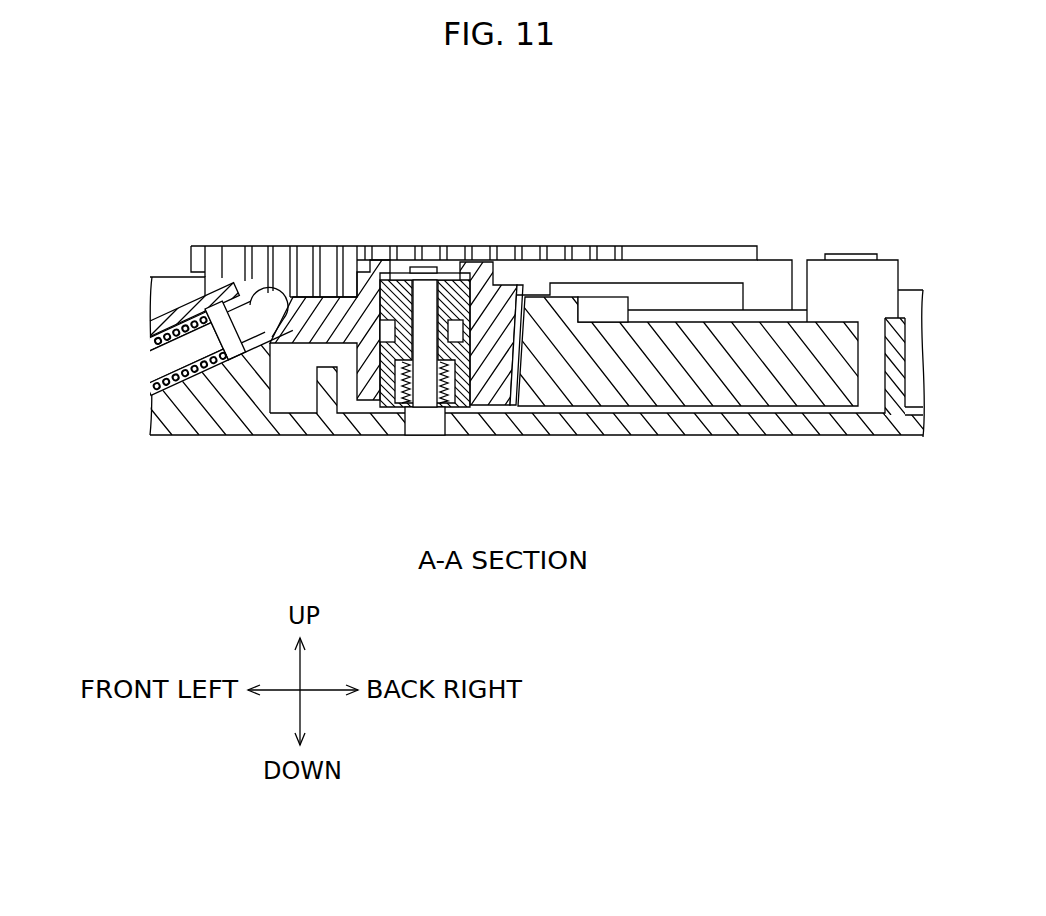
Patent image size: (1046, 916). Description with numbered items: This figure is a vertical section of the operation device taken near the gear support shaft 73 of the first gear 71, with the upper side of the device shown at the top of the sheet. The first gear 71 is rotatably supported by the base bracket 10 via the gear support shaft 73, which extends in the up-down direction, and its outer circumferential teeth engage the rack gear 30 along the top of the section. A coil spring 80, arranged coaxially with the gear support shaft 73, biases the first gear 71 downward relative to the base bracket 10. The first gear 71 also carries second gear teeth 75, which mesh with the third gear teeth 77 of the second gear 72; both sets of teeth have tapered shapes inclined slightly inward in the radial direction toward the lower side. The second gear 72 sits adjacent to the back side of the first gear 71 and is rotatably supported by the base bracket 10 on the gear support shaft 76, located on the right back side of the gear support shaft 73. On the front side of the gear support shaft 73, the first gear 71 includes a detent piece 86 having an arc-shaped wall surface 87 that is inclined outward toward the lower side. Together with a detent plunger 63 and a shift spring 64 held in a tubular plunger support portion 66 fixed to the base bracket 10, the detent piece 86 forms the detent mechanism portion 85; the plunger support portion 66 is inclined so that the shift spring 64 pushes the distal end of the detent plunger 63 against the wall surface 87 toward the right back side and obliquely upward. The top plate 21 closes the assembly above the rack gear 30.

The detent mechanism portion 85 is at (166, 254).
The base bracket 10 is at (198, 413).
The wall surface 87 is at (262, 388).
The plunger support portion 66 is at (172, 306).
The detent plunger 63 is at (163, 362).
The shift spring 64 is at (152, 387).
The top plate 21 is at (456, 247).
The rack gear 30 is at (306, 260).
The detent piece 86 is at (300, 327).
The coil spring 80 is at (392, 392).
The gear support shaft 73 is at (425, 393).
The third gear teeth 77 is at (491, 365).
The second gear teeth 75 is at (522, 375).
The second gear 72 is at (639, 385).
The first gear 71 is at (757, 262).
The gear support shaft 76 is at (852, 255).